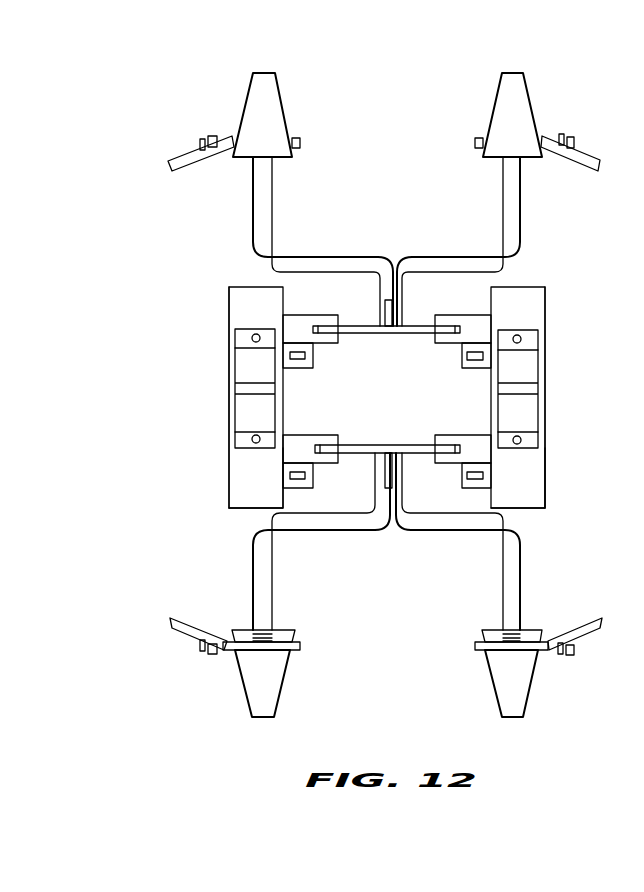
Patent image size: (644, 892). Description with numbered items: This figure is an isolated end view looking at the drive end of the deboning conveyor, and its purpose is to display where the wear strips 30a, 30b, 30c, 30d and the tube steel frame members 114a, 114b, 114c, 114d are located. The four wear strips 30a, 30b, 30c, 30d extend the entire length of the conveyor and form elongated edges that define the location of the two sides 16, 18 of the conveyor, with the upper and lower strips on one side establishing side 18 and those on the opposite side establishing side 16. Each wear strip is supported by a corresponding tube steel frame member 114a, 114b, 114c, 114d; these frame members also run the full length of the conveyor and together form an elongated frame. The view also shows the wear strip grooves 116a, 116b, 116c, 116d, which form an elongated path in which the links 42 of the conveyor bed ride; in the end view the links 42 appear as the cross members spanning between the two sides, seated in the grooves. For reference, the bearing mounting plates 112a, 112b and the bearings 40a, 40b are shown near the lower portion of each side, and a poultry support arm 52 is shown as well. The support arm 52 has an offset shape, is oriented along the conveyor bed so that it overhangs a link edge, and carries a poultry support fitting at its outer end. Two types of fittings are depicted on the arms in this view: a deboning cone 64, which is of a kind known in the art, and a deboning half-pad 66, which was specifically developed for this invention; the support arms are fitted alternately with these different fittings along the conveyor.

The side 16 is at (565, 373).
The side 18 is at (207, 372).
The wear strip 30a is at (480, 327).
The wear strip 30b is at (292, 327).
The wear strip 30c is at (480, 455).
The wear strip 30d is at (290, 458).
The bearing 40a is at (520, 413).
The bearing 40b is at (255, 413).
The link 42 is at (414, 332).
The poultry support arm 52 is at (263, 205).
The deboning cone 64 is at (263, 83).
The deboning half-pad 66 is at (188, 157).
The bearing mounting plate 112a is at (515, 467).
The bearing mounting plate 112b is at (257, 468).
The tube steel frame member 114a is at (483, 357).
The tube steel frame member 114b is at (290, 358).
The tube steel frame member 114c is at (483, 475).
The tube steel frame member 114d is at (290, 477).
The wear strip groove 116a is at (443, 315).
The wear strip groove 116b is at (332, 317).
The wear strip groove 116c is at (445, 458).
The wear strip groove 116d is at (330, 462).